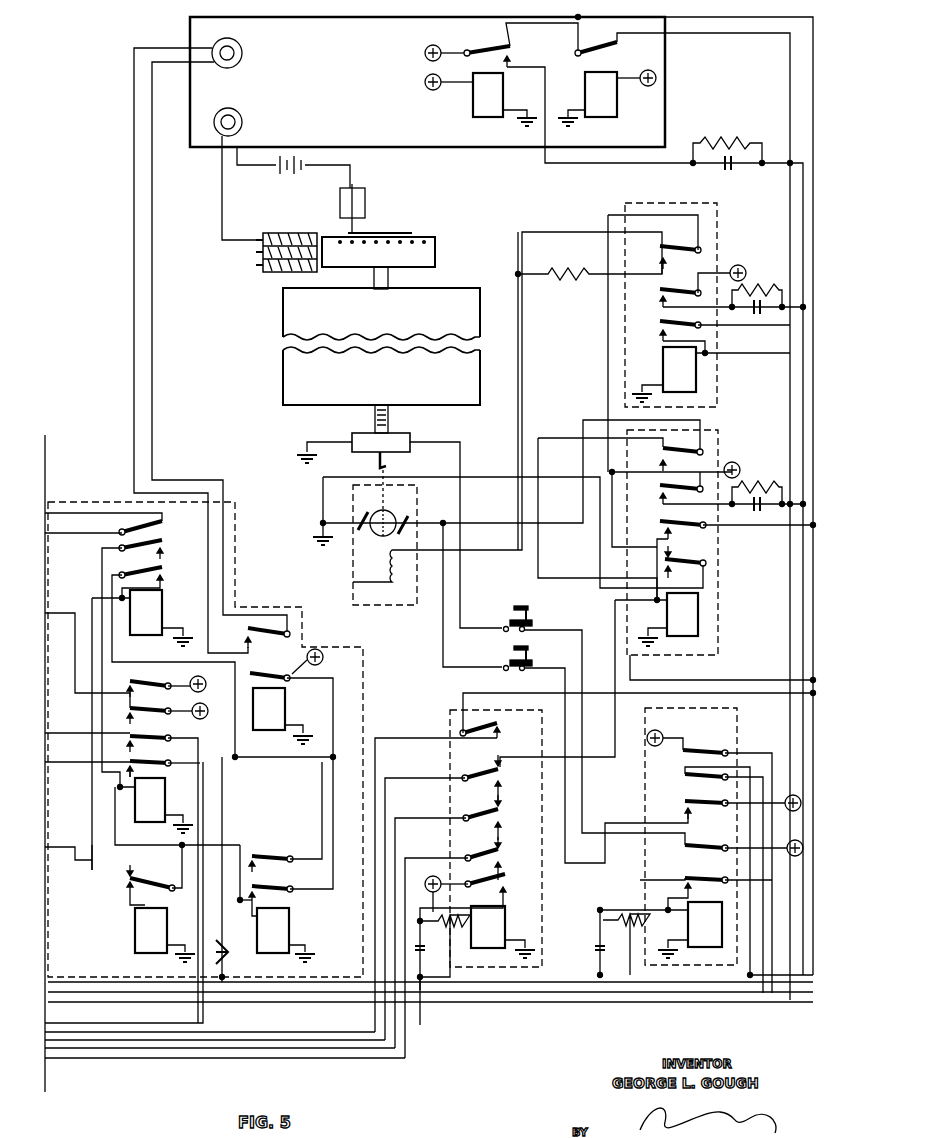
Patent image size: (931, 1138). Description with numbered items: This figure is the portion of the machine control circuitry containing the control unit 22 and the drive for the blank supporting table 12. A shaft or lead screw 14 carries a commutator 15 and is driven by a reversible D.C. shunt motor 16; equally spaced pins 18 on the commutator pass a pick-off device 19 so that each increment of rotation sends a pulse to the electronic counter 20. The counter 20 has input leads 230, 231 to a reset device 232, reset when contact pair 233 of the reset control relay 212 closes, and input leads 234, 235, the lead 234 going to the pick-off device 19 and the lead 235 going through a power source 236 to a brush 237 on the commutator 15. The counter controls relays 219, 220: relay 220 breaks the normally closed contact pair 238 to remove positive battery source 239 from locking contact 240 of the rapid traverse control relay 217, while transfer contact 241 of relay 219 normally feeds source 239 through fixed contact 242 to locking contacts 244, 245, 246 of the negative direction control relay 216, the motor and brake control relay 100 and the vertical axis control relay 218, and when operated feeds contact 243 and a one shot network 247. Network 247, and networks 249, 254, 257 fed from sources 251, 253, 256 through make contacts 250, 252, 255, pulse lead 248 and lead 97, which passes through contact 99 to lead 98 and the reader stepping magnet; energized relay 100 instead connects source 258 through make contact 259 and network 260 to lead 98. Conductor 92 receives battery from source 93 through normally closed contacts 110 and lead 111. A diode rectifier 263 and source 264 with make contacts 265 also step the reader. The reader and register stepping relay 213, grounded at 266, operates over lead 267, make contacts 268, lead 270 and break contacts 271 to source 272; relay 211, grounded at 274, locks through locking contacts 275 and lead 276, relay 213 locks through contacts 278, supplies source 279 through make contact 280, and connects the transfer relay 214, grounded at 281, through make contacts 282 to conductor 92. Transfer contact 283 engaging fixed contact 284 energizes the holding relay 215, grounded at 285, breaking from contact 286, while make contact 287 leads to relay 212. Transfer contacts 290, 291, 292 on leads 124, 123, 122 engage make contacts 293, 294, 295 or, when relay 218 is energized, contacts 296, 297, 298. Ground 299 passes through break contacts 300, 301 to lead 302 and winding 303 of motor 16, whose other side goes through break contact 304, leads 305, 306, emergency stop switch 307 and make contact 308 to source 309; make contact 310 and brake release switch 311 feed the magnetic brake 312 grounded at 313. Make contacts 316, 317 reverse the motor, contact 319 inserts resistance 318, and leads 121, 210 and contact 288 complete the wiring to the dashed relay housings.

The blank supporting table 12 is at (480, 364).
The shaft or lead screw 14 is at (388, 282).
The commutator 15 is at (435, 250).
The reversible D.C. shunt motor 16 is at (405, 514).
The pins 18 is at (418, 236).
The pick-off device 19 is at (262, 241).
The electronic counter 20 is at (370, 144).
The control unit 22 is at (718, 432).
The conductor 92 is at (204, 1014).
The positive battery source 93 is at (656, 736).
The lead 97 is at (323, 978).
The lead 98 is at (517, 993).
The contact 99 is at (684, 776).
The motor and brake control relay 100 is at (661, 930).
The normally closed pair of contacts 110 is at (690, 750).
The lead 111 is at (760, 750).
The conductor 121 is at (297, 1032).
The lead 122 is at (178, 1040).
The lead 123 is at (243, 1048).
The lead 124 is at (310, 1058).
The switch blade 210 is at (160, 520).
The reader and register control relay 211 is at (137, 730).
The reset control relay 212 is at (283, 716).
The reader and register stepping relay 213 is at (151, 800).
The transfer relay 214 is at (165, 935).
The holding relay 215 is at (286, 935).
The negative direction control relay 216 is at (599, 680).
The rapid traverse control relay 217 is at (668, 374).
The vertical axis control relay 218 is at (503, 932).
The counter controlled relay 219 is at (481, 99).
The counter controlled relay 220 is at (607, 98).
The input lead 230 is at (134, 342).
The input lead 231 is at (152, 342).
The reset device 232 is at (238, 46).
The contact pair 233 is at (248, 636).
The input lead 234 is at (222, 196).
The input lead 235 is at (254, 176).
The power source 236 is at (300, 172).
The brush 237 is at (364, 218).
The normally closed contact pair 238 is at (617, 44).
The positive battery source 239 is at (425, 52).
The locking contact 240 is at (658, 321).
The transfer contact 241 is at (467, 52).
The fixed contact 242 is at (506, 38).
The fixed contact 243 is at (512, 62).
The locking contact 244 is at (714, 536).
The locking contact 245 is at (640, 882).
The locking contact 246 is at (500, 732).
The network 247 is at (724, 142).
The lead 248 is at (750, 993).
The network 249 is at (748, 290).
The make contact 250 is at (658, 289).
The positive battery source 251 is at (742, 266).
The make contact 252 is at (660, 488).
The battery source 253 is at (738, 463).
The one shot network 254 is at (758, 488).
The make contact 255 is at (507, 882).
The positive battery source 256 is at (436, 876).
The one shot network 257 is at (446, 993).
The positive battery source 258 is at (793, 795).
The make contact 259 is at (688, 812).
The one shot network 260 is at (622, 990).
The diode rectifier 263 is at (226, 955).
The positive battery source 264 is at (198, 708).
The make contacts 265 is at (128, 708).
The ground 266 is at (180, 828).
The lead 267 is at (128, 650).
The make contacts 268 is at (165, 548).
The lead 270 is at (130, 852).
The break contacts 271 is at (252, 671).
The positive battery source 272 is at (318, 654).
The ground 274 is at (188, 632).
The locking contacts 275 is at (165, 574).
The lead 276 is at (236, 752).
The locking contacts 278 is at (128, 761).
The source 279 is at (198, 680).
The make contact 280 is at (130, 681).
The ground 281 is at (178, 958).
The make contacts 282 is at (128, 736).
The transfer contact 283 is at (128, 870).
The fixed contact 284 is at (128, 892).
The ground 285 is at (306, 952).
The contact 286 is at (128, 878).
The make contact 287 is at (256, 868).
The switch blade 288 is at (266, 898).
The transfer contact 290 is at (460, 844).
The transfer contact 291 is at (462, 808).
The transfer contact 292 is at (460, 768).
The make contact 293 is at (496, 844).
The make contact 294 is at (496, 804).
The make contact 295 is at (496, 764).
The make contact 296 is at (502, 854).
The make contact 297 is at (502, 816).
The make contact 298 is at (502, 776).
The ground 299 is at (323, 523).
The break contact 300 is at (670, 549).
The break contact 301 is at (660, 244).
The lead 302 is at (522, 356).
The winding 303 is at (353, 577).
The break contact 304 is at (666, 449).
The lead 305 is at (580, 518).
The lead 306 is at (443, 633).
The emergency stop switch 307 is at (526, 666).
The make contact 308 is at (686, 858).
The positive battery source 309 is at (796, 840).
The make contact 310 is at (690, 848).
The emergency manually operable brake release switch 311 is at (526, 626).
The magnetic brake 312 is at (410, 440).
The ground 313 is at (307, 452).
The make contact 316 is at (676, 561).
The make contact 317 is at (668, 464).
The resistance 318 is at (566, 272).
The contact 319 is at (661, 262).